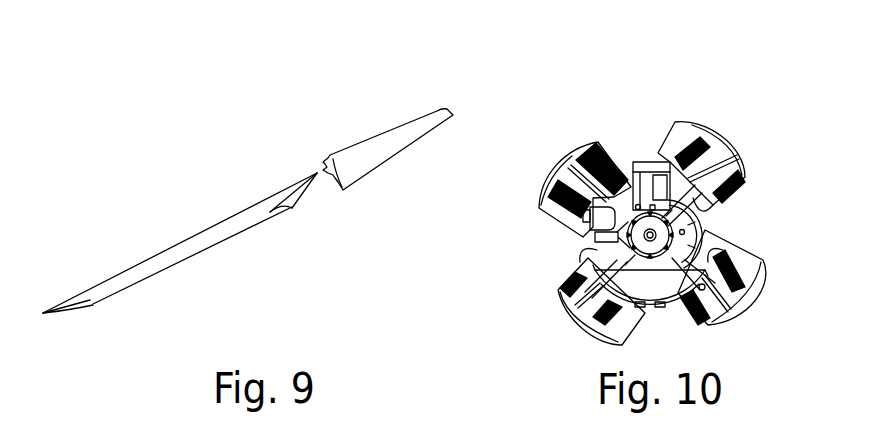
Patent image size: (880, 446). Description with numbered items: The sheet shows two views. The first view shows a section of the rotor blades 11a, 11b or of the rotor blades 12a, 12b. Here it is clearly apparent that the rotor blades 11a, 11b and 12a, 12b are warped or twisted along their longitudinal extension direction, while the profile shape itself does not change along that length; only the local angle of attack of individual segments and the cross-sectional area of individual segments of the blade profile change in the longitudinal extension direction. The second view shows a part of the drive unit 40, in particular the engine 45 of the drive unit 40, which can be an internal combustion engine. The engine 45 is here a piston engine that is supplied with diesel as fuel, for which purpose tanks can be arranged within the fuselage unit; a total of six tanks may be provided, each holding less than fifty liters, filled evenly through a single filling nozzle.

In FIG. 9, the rotor blade 11a is at (416, 176).
In FIG. 9, the rotor blade 12a is at (387, 150).
In FIG. 9, the rotor blade 11b is at (180, 243).
In FIG. 9, the rotor blade 12b is at (157, 256).
In FIG. 10, the drive unit 40 is at (630, 185).
In FIG. 10, the engine 45 is at (563, 99).